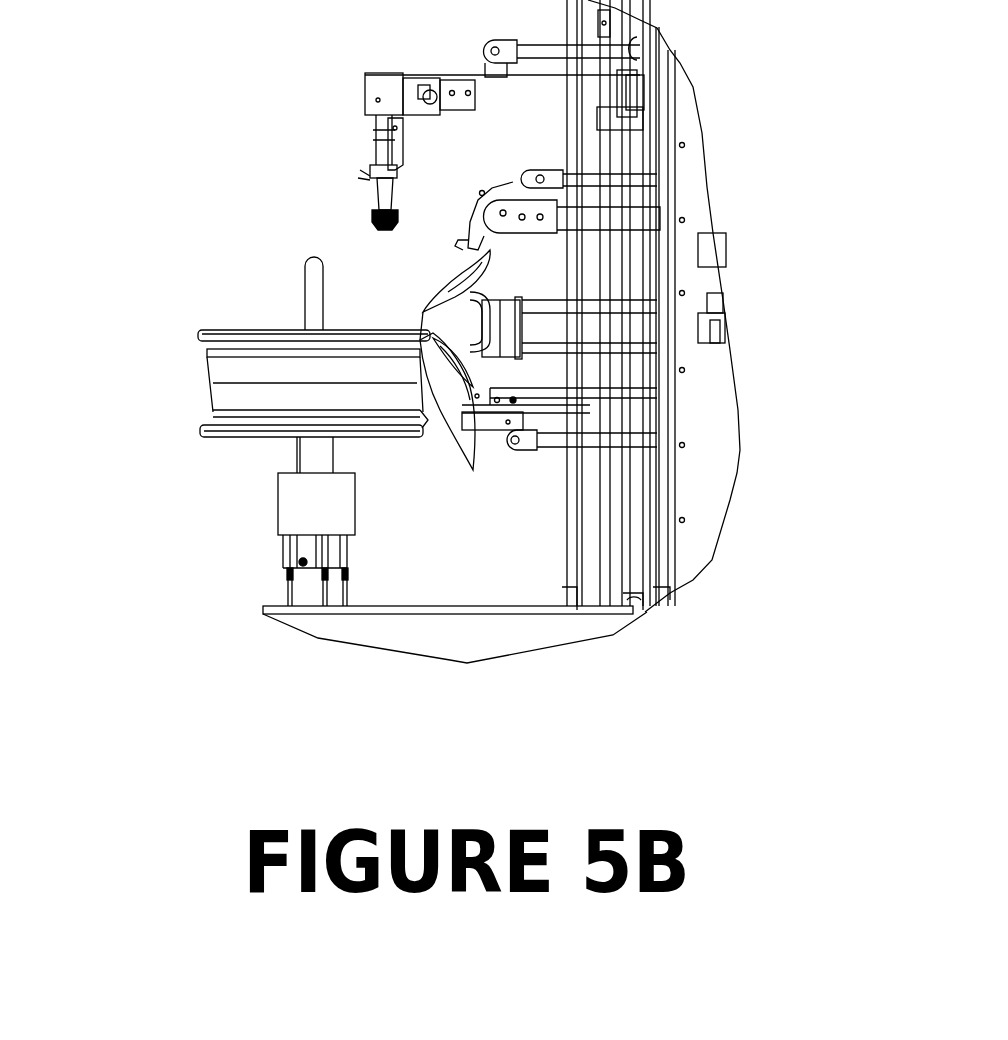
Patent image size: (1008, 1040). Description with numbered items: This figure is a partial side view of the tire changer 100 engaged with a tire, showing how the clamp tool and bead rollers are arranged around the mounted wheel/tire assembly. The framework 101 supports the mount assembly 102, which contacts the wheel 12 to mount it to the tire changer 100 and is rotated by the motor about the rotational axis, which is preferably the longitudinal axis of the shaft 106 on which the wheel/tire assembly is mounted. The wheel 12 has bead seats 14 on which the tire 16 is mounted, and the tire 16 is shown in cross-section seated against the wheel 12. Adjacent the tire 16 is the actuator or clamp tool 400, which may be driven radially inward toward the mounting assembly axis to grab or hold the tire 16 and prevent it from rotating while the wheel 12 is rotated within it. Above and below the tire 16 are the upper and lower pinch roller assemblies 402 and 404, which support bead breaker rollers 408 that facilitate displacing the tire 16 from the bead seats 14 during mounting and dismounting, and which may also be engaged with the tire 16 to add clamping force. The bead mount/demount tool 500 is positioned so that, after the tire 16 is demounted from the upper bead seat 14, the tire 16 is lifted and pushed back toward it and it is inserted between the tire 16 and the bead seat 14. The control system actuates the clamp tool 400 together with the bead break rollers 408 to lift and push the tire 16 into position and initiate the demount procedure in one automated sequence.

The tire changer 100 is at (461, 337).
The framework 101 is at (512, 616).
The mount assembly 102 is at (275, 513).
The shaft 106 is at (302, 276).
The wheel 12 is at (243, 398).
The bead seats 14 is at (423, 417).
The tire 16 is at (412, 302).
The clamp tool 400 is at (500, 330).
The upper pinch roller assembly 402 is at (578, 205).
The lower pinch roller assembly 404 is at (602, 392).
The bead breaker roller 408 is at (433, 277).
The bead mount/demount tool 500 is at (366, 176).